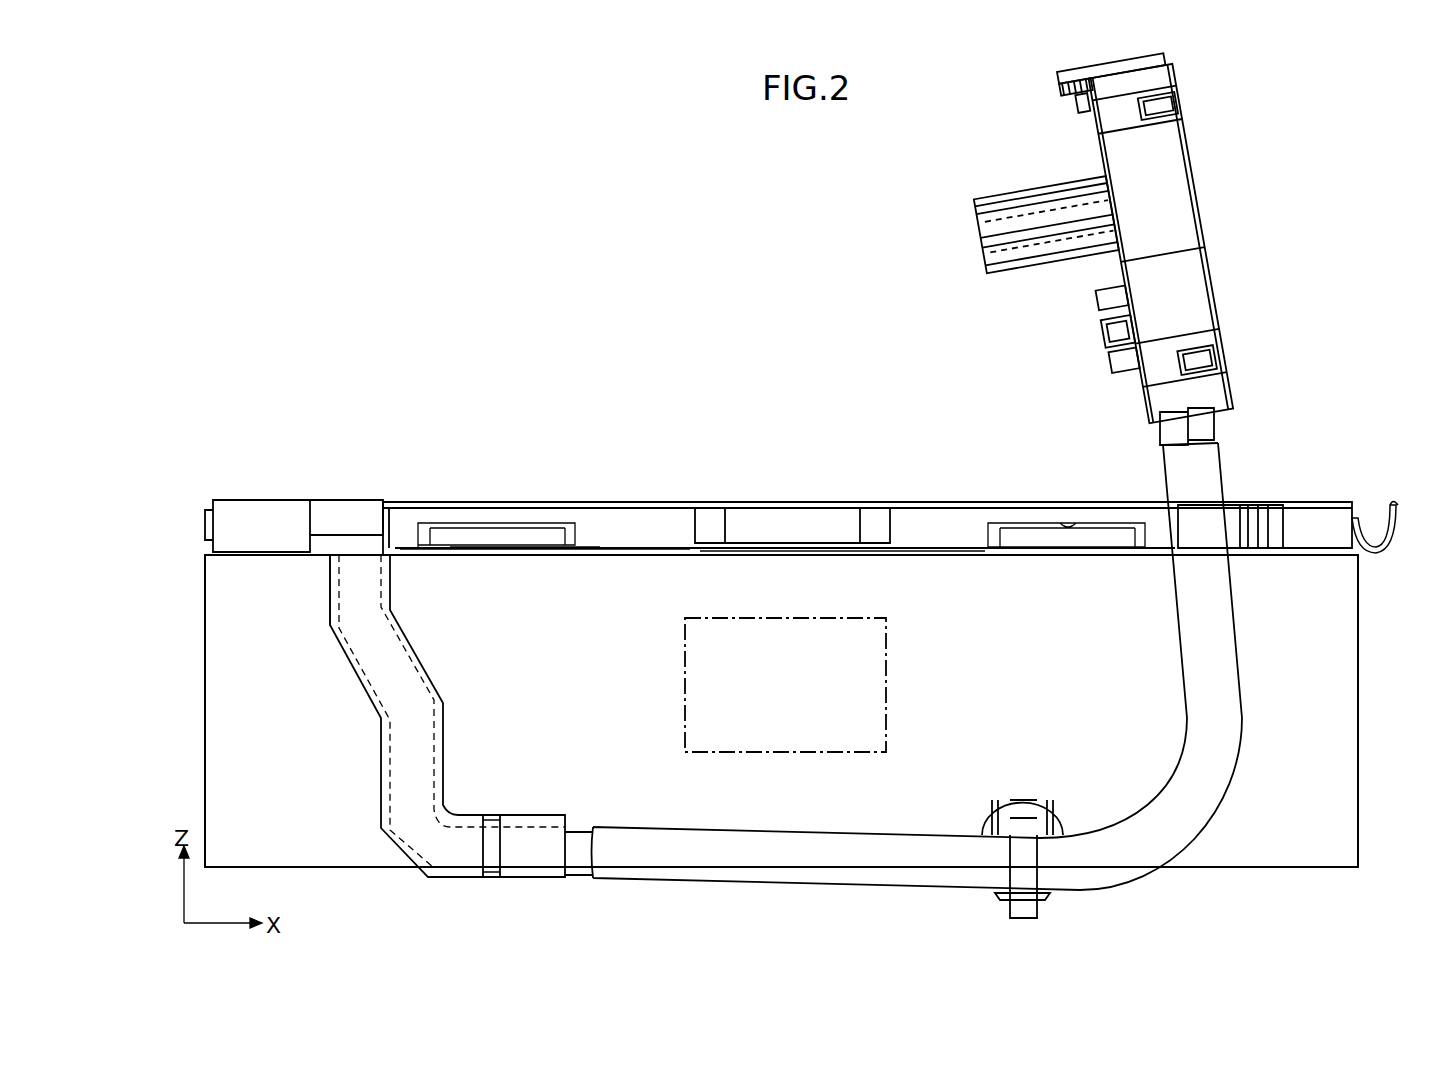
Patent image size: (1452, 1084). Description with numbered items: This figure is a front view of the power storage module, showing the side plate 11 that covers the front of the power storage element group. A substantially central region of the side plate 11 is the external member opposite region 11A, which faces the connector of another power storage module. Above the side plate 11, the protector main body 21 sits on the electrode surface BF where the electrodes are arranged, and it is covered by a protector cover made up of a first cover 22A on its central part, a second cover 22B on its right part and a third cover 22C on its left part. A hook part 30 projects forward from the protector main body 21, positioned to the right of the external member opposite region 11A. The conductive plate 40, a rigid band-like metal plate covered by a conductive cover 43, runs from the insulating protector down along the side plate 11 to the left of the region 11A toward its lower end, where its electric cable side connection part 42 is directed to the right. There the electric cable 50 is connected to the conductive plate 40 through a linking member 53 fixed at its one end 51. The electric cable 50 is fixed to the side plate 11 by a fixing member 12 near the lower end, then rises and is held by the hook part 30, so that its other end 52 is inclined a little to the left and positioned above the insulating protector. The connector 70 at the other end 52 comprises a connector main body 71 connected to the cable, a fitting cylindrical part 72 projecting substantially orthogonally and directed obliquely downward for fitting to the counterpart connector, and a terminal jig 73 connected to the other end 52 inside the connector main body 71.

The side plate 11 is at (1325, 705).
The external member opposite region 11A is at (790, 752).
The fixing member 12 is at (1028, 865).
The protector main body 21 is at (405, 528).
The first cover 22A is at (780, 502).
The second cover 22B is at (1093, 500).
The third cover 22C is at (420, 500).
The electrode surface BF is at (510, 552).
The hook part 30 is at (1227, 523).
The conductive plate 40 is at (380, 790).
The electric cable side connection part 42 is at (496, 870).
The conductive cover 43 is at (330, 605).
The electric cable 50 is at (1120, 890).
The one end 51 is at (572, 878).
The other end 52 is at (1210, 425).
The linking member 53 is at (522, 878).
The connector 70 is at (1077, 249).
The connector main body 71 is at (1145, 240).
The fitting cylindrical part 72 is at (1046, 224).
The terminal jig 73 is at (1049, 226).